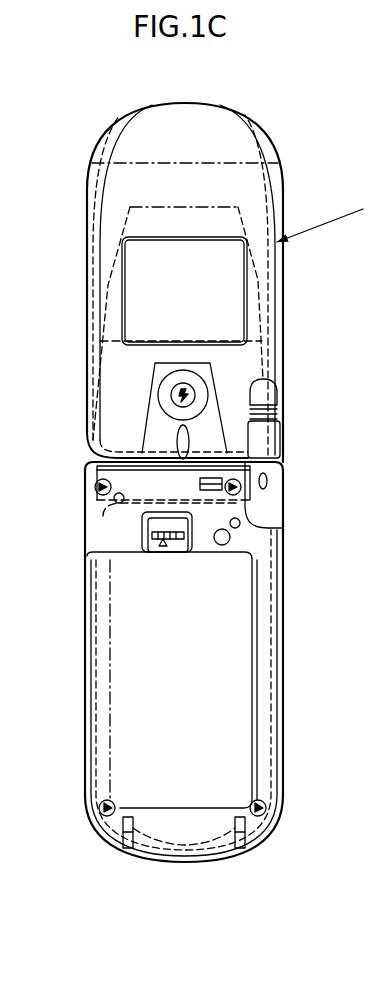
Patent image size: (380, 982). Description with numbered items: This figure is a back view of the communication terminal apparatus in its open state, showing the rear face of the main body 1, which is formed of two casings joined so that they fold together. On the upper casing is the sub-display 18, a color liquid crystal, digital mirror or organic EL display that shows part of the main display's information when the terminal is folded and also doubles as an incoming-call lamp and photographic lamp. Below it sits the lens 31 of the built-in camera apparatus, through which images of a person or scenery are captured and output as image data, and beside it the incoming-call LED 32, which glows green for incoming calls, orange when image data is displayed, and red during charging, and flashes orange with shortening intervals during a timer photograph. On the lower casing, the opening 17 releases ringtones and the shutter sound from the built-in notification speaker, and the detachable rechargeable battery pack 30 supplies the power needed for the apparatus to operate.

The main body 1 is at (268, 435).
The opening 17 is at (241, 521).
The sub-display 18 is at (227, 305).
The rechargeable battery pack 30 is at (208, 640).
The lens 31 is at (170, 390).
The incoming-call LED 32 is at (170, 438).